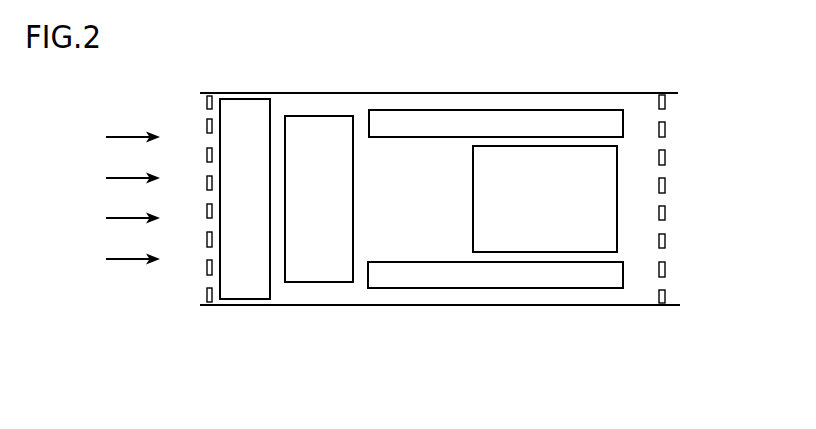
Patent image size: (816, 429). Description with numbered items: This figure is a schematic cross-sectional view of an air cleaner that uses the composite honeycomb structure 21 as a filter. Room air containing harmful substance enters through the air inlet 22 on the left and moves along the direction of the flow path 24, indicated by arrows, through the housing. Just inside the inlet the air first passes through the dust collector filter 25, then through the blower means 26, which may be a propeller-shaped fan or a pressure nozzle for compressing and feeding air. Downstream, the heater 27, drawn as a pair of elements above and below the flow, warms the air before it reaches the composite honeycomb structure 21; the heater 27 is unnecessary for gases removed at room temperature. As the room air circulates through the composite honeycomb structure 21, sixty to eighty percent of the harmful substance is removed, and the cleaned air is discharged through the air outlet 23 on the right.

The composite honeycomb structure 21 is at (561, 158).
The air inlet 22 is at (206, 240).
The air outlet 23 is at (666, 128).
The flow path 24 is at (121, 262).
The dust collector filter 25 is at (245, 112).
The blower means 26 is at (318, 127).
The heater 27 is at (444, 120).